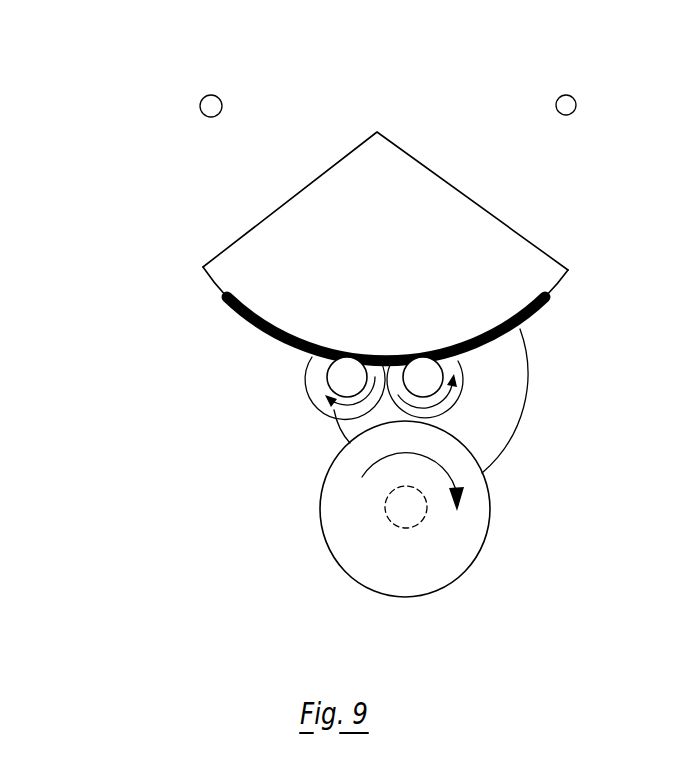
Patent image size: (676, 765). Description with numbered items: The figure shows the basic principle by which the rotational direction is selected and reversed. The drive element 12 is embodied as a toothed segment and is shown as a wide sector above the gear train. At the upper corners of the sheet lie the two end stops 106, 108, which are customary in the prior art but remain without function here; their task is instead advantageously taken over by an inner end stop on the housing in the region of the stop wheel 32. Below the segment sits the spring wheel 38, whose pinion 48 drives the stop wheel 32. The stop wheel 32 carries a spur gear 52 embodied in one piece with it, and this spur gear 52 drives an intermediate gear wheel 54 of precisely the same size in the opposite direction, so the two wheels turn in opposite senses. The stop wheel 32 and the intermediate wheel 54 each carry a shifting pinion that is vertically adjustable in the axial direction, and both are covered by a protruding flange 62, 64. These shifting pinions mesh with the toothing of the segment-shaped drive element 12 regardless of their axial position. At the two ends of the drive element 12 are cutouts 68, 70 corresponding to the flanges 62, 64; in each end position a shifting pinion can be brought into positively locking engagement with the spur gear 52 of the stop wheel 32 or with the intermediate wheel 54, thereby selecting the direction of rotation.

The drive element 12 is at (405, 273).
The stop wheel 32 is at (488, 452).
The spring wheel 38 is at (433, 580).
The pinion 48 is at (417, 520).
The spur gear 52 is at (447, 403).
The intermediate gear wheel 54 is at (325, 403).
The protruding flange 62 is at (440, 381).
The protruding flange 64 is at (337, 383).
The cutout 68 is at (218, 282).
The cutout 70 is at (550, 290).
The end stop 106 is at (214, 103).
The end stop 108 is at (570, 101).